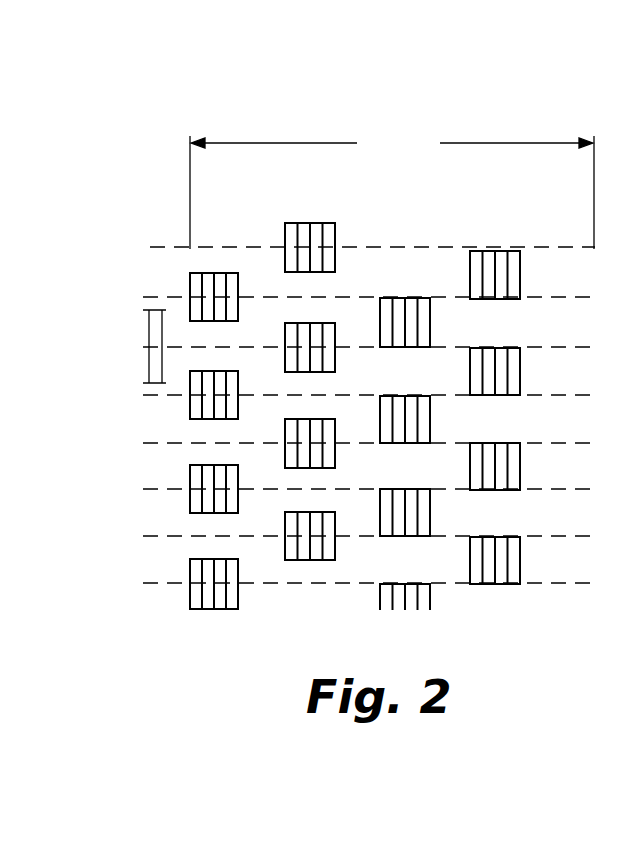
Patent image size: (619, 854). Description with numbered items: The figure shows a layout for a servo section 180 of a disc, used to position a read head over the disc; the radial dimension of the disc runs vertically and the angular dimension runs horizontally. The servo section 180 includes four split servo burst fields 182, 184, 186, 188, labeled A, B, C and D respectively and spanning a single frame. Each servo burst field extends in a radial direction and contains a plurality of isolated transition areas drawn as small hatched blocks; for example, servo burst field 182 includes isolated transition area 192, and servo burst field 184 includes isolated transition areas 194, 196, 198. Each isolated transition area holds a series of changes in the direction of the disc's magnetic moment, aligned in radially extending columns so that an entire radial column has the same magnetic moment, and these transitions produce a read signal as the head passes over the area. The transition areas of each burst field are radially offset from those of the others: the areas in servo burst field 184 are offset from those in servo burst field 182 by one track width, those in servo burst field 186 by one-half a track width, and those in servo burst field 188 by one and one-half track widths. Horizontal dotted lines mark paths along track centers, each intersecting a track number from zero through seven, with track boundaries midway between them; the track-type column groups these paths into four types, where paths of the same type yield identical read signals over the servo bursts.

The servo section 180 is at (318, 321).
The servo burst field 182 is at (156, 327).
The servo burst field 184 is at (338, 296).
The servo burst field 186 is at (374, 170).
The servo burst field 188 is at (482, 156).
The isolated transition area 192 is at (200, 272).
The isolated transition area 194 is at (335, 232).
The isolated transition area 196 is at (335, 327).
The isolated transition area 198 is at (335, 420).